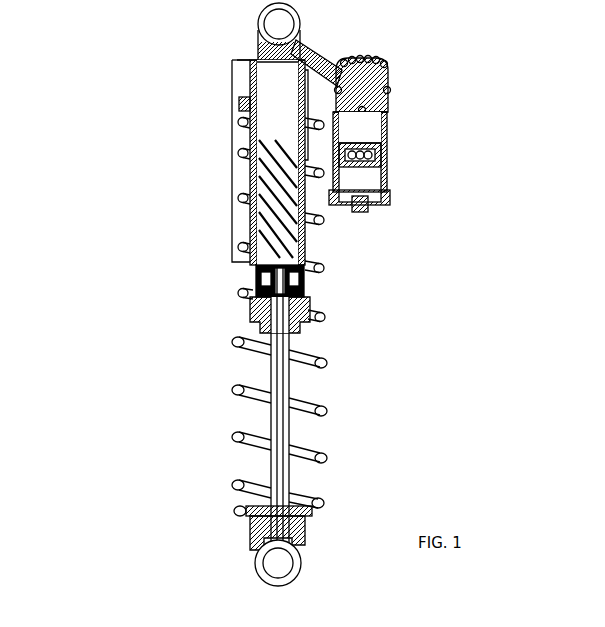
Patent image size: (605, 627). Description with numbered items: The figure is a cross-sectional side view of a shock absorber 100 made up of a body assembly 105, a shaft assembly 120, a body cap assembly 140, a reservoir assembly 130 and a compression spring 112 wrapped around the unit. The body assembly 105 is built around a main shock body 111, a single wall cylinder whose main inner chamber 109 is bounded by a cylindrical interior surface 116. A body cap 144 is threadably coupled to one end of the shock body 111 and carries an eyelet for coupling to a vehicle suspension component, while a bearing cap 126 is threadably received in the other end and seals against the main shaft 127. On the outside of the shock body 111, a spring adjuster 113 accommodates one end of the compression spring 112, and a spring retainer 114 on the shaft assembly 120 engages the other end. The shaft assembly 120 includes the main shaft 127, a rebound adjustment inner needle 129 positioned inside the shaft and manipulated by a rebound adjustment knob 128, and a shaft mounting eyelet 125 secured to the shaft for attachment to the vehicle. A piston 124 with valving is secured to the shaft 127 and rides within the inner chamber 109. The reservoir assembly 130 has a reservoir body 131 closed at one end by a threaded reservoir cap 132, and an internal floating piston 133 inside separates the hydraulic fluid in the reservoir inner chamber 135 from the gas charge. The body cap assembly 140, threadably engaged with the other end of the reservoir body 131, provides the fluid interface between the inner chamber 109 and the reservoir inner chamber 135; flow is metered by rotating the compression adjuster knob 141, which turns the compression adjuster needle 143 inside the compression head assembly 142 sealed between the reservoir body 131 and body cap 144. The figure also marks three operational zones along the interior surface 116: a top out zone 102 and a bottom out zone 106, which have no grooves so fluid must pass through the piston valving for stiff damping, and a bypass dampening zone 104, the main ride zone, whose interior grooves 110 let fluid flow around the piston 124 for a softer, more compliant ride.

The shock absorber 100 is at (97, 95).
The top out zone 102 is at (230, 265).
The bypass dampening zone 104 is at (236, 195).
The body assembly 105 is at (220, 148).
The bottom out zone 106 is at (238, 104).
The main inner chamber 109 is at (275, 80).
The interior grooves 110 is at (352, 240).
The main shock body 111 is at (233, 172).
The compression spring 112 is at (326, 268).
The spring adjuster 113 is at (233, 102).
The spring retainer 114 is at (247, 517).
The interior surface 116 is at (257, 133).
The shaft assembly 120 is at (242, 413).
The piston 124 is at (253, 280).
The shaft mounting eyelet 125 is at (300, 550).
The bearing cap 126 is at (307, 332).
The main shaft 127 is at (265, 355).
The rebound adjustment knob 128 is at (255, 548).
The rebound adjustment inner needle 129 is at (286, 384).
The reservoir assembly 130 is at (430, 152).
The reservoir body 131 is at (387, 130).
The reservoir cap 132 is at (380, 205).
The internal floating piston 133 is at (386, 155).
The reservoir inner chamber 135 is at (363, 128).
The body cap assembly 140 is at (424, 72).
The compression adjuster knob 141 is at (348, 62).
The compression head assembly 142 is at (388, 106).
The compression adjuster needle 143 is at (386, 65).
The body cap 144 is at (299, 25).